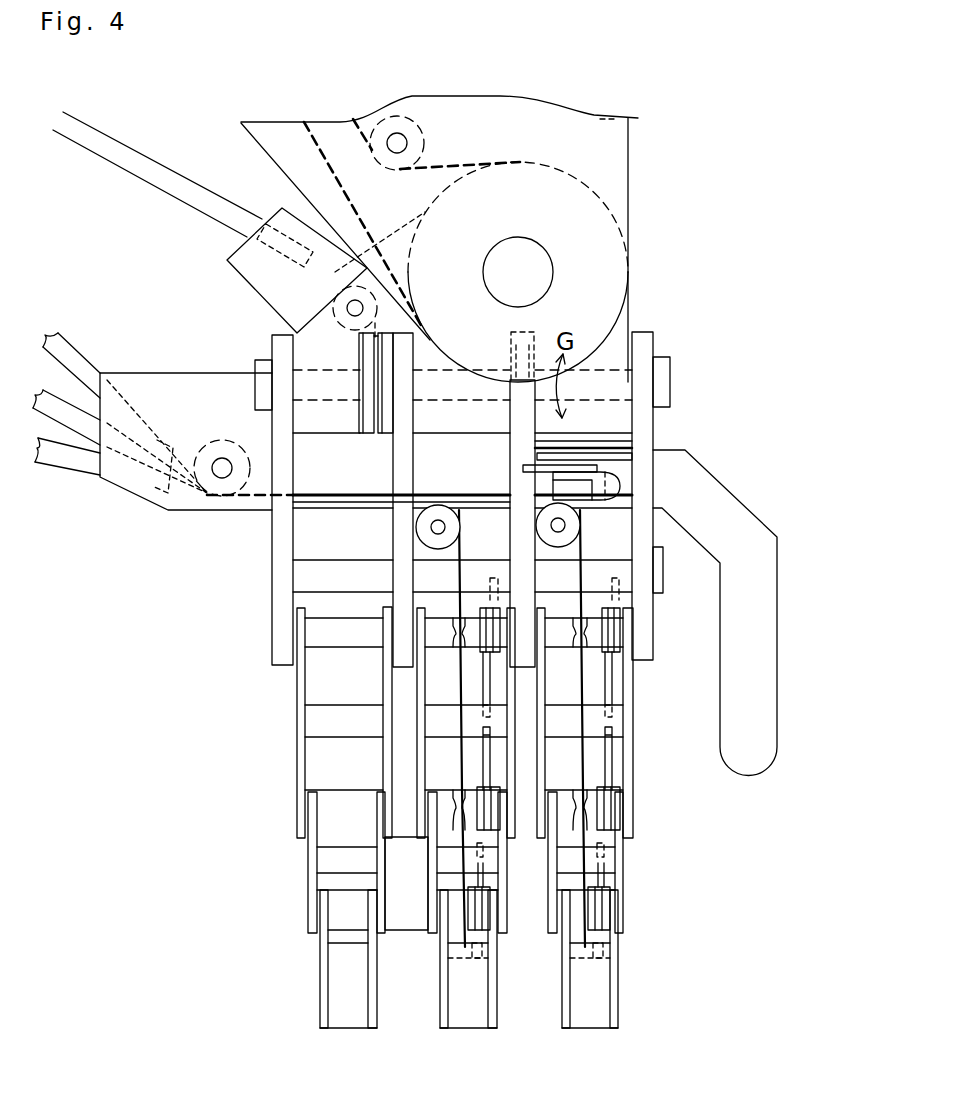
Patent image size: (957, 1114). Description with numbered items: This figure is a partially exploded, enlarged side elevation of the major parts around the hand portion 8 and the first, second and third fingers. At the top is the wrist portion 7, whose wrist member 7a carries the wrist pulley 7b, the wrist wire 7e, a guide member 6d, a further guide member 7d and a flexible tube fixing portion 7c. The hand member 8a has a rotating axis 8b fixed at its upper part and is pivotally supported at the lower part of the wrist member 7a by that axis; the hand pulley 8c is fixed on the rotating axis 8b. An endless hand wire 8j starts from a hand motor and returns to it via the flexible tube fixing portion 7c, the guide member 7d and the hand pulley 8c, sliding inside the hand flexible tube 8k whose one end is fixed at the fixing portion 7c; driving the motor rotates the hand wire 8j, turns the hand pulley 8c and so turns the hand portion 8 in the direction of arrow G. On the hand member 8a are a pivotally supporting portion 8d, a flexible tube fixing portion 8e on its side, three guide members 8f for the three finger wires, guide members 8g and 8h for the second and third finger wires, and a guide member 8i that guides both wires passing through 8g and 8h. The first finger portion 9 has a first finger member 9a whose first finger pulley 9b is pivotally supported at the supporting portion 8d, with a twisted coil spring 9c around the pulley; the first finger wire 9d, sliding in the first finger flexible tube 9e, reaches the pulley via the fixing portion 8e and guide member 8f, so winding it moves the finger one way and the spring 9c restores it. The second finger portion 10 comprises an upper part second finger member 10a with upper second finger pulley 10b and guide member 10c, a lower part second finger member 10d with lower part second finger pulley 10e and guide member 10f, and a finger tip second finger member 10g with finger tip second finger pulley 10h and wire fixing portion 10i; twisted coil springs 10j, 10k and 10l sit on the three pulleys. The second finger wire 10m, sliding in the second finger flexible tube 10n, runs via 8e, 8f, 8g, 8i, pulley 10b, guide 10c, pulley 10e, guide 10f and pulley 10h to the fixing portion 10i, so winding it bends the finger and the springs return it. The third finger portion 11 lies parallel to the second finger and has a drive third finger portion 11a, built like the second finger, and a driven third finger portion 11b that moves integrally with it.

The guide member 6d is at (397, 132).
The wrist portion 7 is at (668, 157).
The wrist member 7a is at (390, 240).
The wrist pulley 7b is at (598, 248).
The flexible tube fixing portion 7c is at (233, 248).
The guide member 7d is at (333, 313).
The wrist wire 7e is at (312, 137).
The hand portion 8 is at (688, 278).
The hand member 8a is at (645, 380).
The rotating axis 8b is at (613, 363).
The hand pulley 8c is at (365, 362).
The pivotally supporting portion 8d is at (617, 440).
The flexible tube fixing portion 8e is at (172, 503).
The guide members 8f is at (218, 490).
The guide member 8g is at (577, 525).
The guide member 8h is at (427, 533).
The guide member 8i is at (310, 565).
The hand wire 8j is at (335, 272).
The hand flexible tube 8k is at (122, 155).
The first finger portion 9 is at (764, 375).
The first finger member 9a is at (753, 760).
The first finger pulley 9b is at (582, 493).
The twisted coil spring 9c is at (598, 467).
The first finger wire 9d is at (313, 492).
The first finger flexible tube 9e is at (87, 465).
The second finger portion 10 is at (643, 1023).
The upper part second finger member 10a is at (635, 755).
The upper second finger pulley 10b is at (623, 637).
The guide member 10c is at (620, 722).
The lower part second finger member 10d is at (623, 903).
The lower part second finger pulley 10e is at (617, 800).
The guide member 10f is at (613, 862).
The finger tip second finger member 10g is at (597, 1013).
The finger tip second finger pulley 10h is at (577, 915).
The wire fixing portion 10i is at (605, 963).
The twisted coil spring 10j is at (613, 625).
The twisted coil spring 10k is at (608, 822).
The twisted coil spring 10l is at (613, 930).
The second finger wire 10m is at (582, 567).
The second finger flexible tube 10n is at (72, 418).
The third finger portion 11 is at (292, 965).
The drive third finger portion 11a is at (465, 1010).
The driven third finger portion 11b is at (350, 1013).